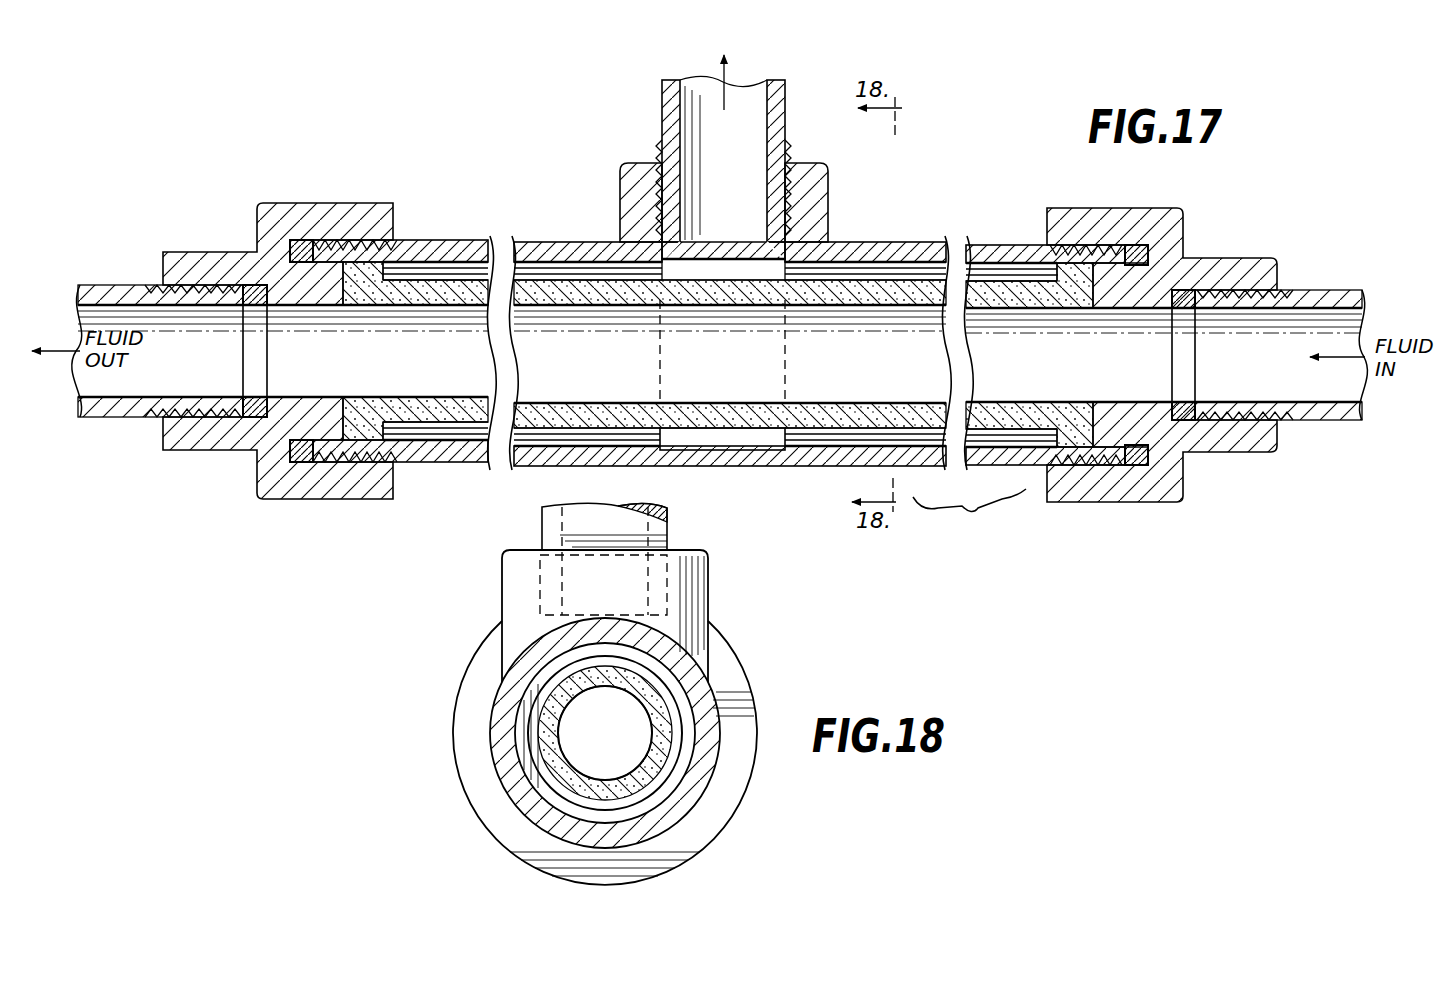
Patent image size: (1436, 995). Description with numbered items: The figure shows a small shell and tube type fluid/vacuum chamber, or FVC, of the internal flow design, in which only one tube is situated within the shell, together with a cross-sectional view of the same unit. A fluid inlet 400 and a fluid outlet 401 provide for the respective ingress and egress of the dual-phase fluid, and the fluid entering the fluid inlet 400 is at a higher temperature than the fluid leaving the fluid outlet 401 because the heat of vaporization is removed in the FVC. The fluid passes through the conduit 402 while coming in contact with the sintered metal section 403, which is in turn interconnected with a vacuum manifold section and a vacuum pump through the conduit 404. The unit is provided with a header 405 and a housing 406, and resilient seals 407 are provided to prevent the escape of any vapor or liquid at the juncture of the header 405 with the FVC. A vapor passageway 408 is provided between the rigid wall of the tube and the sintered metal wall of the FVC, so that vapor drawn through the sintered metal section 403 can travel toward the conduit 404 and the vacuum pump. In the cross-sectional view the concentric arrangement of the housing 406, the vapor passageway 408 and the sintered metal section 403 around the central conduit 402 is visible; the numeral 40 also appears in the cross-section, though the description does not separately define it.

In FIG. 17, the fluid inlet 400 is at (1325, 325).
In FIG. 17, the fluid outlet 401 is at (97, 318).
In FIG. 17, the conduit 402 is at (622, 373).
In FIG. 17, the sintered metal section 403 is at (520, 290).
In FIG. 18, the sintered metal section 403 is at (668, 790).
In FIG. 17, the conduit 404 is at (786, 92).
In FIG. 18, the conduit 404 is at (668, 518).
In FIG. 17, the header 405 is at (305, 500).
In FIG. 17, the housing 406 is at (433, 458).
In FIG. 18, the housing 406 is at (712, 718).
In FIG. 17, the resilient seals 407 is at (292, 249).
In FIG. 17, the vapor passageway 408 is at (598, 272).
In FIG. 18, the vapor passageway 408 is at (627, 762).
In FIG. 18, the tube wall 40 is at (672, 690).